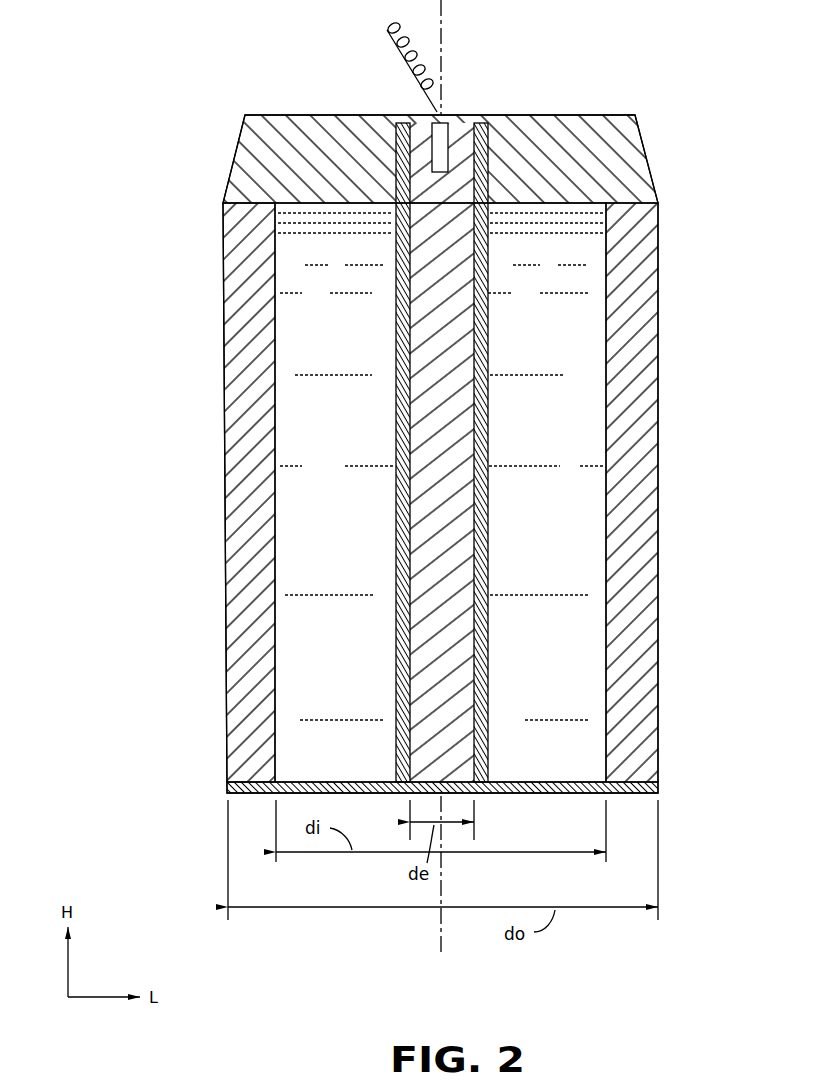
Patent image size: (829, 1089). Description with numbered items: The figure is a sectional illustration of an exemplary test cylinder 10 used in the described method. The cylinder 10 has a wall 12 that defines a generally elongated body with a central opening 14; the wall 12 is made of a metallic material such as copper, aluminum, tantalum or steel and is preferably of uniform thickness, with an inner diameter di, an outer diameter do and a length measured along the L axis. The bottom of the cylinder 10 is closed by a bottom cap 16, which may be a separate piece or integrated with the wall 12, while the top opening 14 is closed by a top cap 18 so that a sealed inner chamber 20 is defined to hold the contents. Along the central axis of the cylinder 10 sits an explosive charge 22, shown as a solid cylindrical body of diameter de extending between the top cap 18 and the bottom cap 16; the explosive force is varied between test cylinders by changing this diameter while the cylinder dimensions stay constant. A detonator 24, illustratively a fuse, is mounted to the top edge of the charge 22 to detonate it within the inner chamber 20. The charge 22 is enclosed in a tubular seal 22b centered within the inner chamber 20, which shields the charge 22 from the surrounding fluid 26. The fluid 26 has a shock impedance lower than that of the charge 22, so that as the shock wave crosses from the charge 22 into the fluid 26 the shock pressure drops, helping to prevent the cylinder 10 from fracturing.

The cylinder 10 is at (637, 86).
The wall 12 is at (640, 293).
The central opening 14 is at (318, 205).
The bottom cap 16 is at (645, 794).
The top cap 18 is at (547, 130).
The inner chamber 20 is at (584, 252).
The charge 22 is at (483, 452).
The tubular seal 22b is at (486, 338).
The detonator 24 is at (463, 70).
The fluid 26 is at (559, 546).